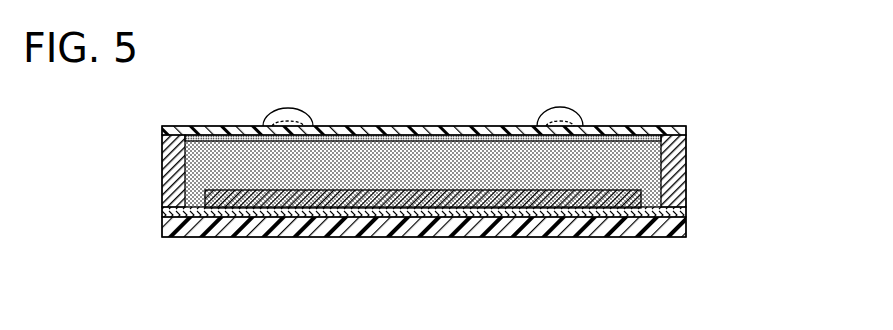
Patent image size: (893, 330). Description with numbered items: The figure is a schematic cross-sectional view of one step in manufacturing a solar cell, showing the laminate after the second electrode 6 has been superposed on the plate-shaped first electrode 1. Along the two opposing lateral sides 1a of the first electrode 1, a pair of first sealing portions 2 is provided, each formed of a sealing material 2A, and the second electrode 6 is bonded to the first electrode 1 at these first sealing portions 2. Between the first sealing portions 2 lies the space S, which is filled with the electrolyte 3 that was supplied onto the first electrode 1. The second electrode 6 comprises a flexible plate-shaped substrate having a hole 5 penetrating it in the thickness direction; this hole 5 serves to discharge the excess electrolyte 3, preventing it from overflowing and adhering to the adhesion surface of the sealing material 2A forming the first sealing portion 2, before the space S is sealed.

The first electrode 1 is at (605, 258).
The lateral side 1a is at (162, 223).
The first sealing portion 2 is at (421, 163).
The sealing material 2A is at (163, 178).
The electrolyte 3 is at (296, 116).
The hole 5 is at (285, 130).
The second electrode 6 is at (418, 117).
The space S is at (472, 176).